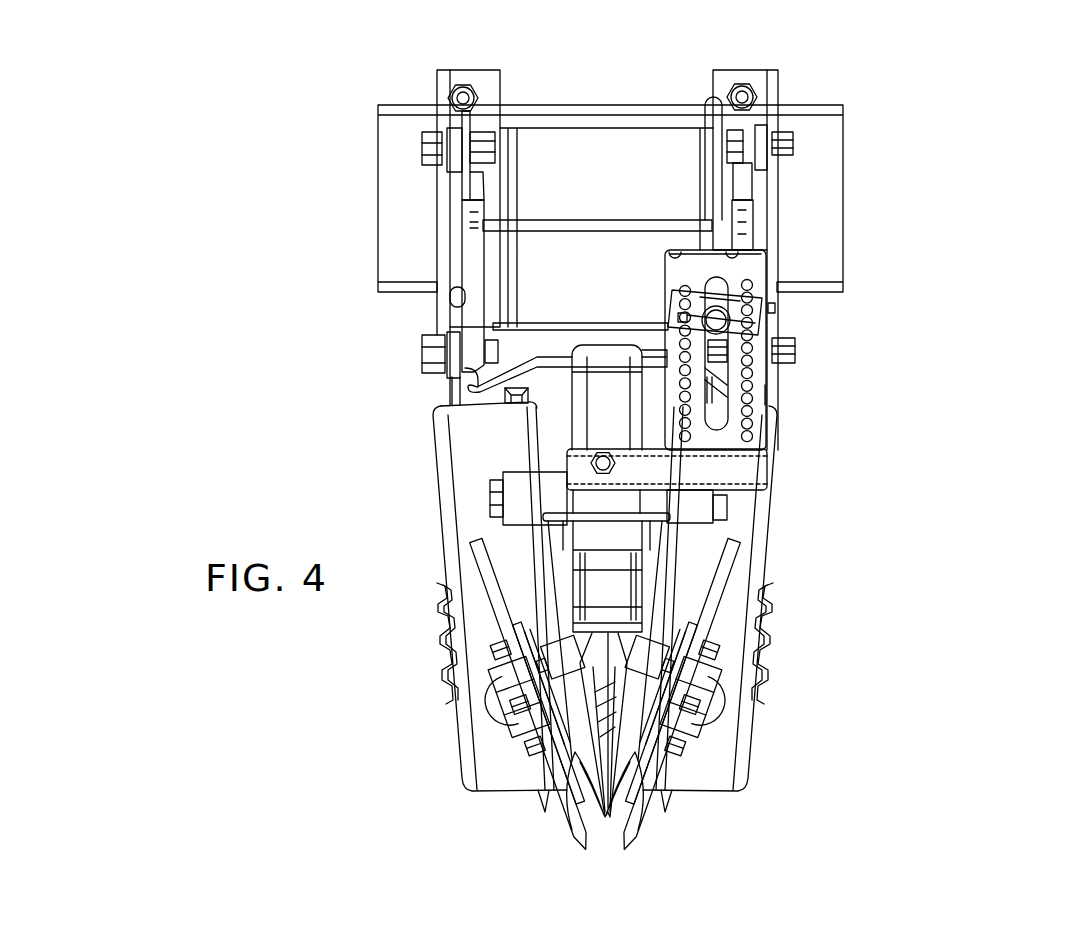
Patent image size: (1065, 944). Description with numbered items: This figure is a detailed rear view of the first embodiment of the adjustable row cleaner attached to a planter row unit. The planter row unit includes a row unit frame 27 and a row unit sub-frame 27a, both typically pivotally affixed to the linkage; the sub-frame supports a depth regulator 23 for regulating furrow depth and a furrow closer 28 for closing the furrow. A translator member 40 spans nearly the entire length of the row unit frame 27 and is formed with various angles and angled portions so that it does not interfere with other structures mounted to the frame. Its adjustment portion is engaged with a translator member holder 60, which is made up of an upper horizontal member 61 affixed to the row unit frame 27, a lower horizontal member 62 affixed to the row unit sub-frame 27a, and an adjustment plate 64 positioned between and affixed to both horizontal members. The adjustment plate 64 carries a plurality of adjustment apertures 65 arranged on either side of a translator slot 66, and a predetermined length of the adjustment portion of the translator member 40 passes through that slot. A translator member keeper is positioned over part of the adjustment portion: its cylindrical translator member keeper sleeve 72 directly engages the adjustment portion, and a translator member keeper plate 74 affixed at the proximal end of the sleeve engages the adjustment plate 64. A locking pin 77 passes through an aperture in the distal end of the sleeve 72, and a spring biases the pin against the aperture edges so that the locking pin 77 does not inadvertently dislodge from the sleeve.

The depth regulator 23 is at (490, 752).
The row unit frame 27 is at (473, 255).
The row unit sub-frame 27a is at (458, 422).
The furrow closer 28 is at (609, 850).
The translator member 40 is at (712, 102).
The translator member holder 60 is at (858, 328).
The upper horizontal member 61 is at (555, 220).
The lower horizontal member 62 is at (733, 478).
The adjustment plate 64 is at (758, 393).
The adjustment apertures 65 is at (753, 428).
The translator slot 66 is at (753, 487).
The translator member keeper sleeve 72 is at (718, 304).
The translator member keeper plate 74 is at (773, 312).
The locking pin 77 is at (773, 318).